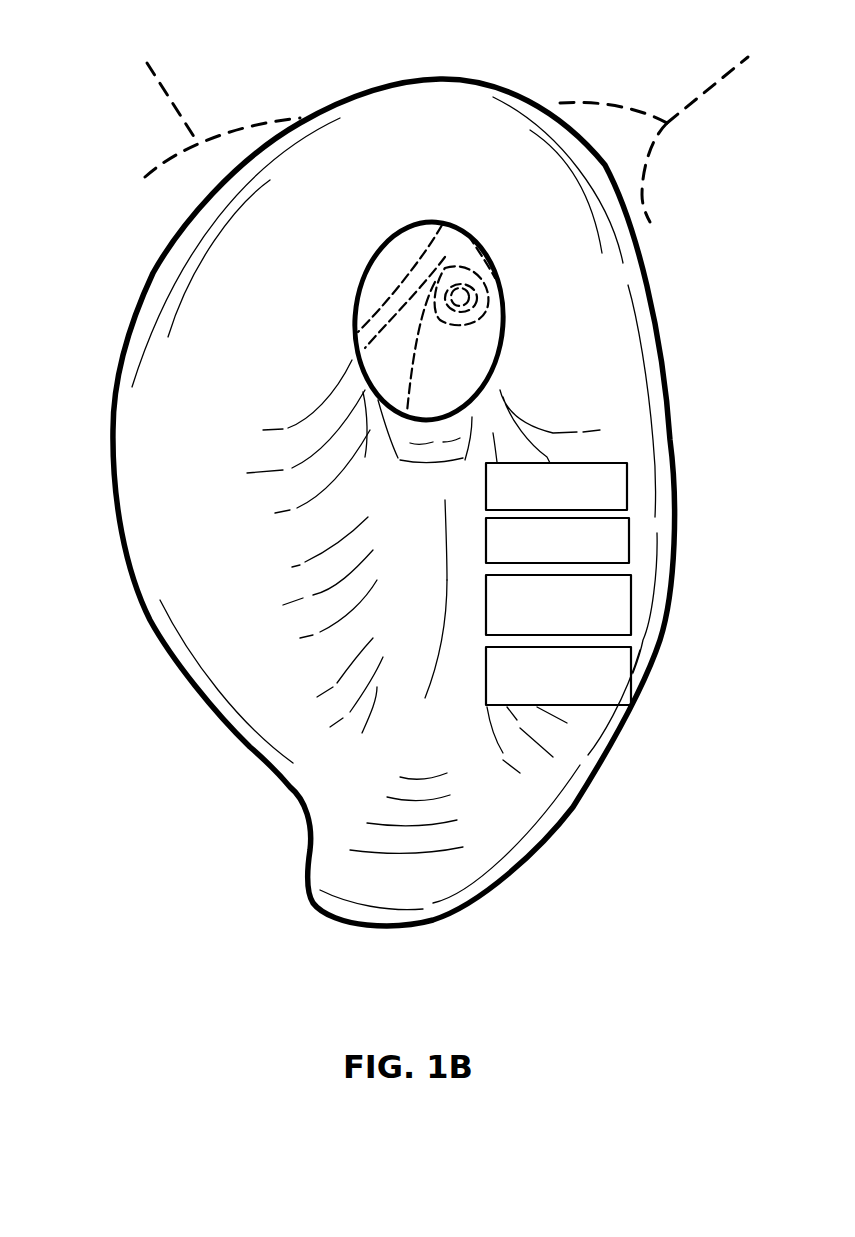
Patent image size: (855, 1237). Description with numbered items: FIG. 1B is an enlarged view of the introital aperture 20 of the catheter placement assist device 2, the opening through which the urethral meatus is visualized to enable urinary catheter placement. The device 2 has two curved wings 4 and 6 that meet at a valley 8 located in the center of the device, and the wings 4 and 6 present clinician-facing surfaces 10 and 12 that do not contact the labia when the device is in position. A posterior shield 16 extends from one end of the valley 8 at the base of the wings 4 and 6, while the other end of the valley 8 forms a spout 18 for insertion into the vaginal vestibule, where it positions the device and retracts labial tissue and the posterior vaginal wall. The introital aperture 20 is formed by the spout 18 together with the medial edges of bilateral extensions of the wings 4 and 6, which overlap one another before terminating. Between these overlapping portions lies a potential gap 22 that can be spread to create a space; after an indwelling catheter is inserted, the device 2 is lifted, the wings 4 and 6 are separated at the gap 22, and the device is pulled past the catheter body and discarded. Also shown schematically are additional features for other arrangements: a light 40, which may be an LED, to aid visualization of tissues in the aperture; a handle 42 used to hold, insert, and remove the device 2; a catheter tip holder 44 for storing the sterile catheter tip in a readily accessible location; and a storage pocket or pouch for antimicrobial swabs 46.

The catheter placement assist device 2 is at (190, 848).
The wing 4 is at (113, 437).
The wing 6 is at (583, 770).
The valley 8 is at (447, 595).
The clinician-facing surface 10 is at (163, 513).
The clinician-facing surface 12 is at (643, 527).
The posterior shield 16 is at (360, 923).
The spout 18 is at (441, 411).
The introital aperture 20 is at (503, 300).
The potential gap 22 is at (417, 226).
The light 40 is at (630, 483).
The handle 42 is at (630, 540).
The catheter tip holder 44 is at (632, 600).
The storage pocket or pouch for antimicrobial swabs 46 is at (630, 673).